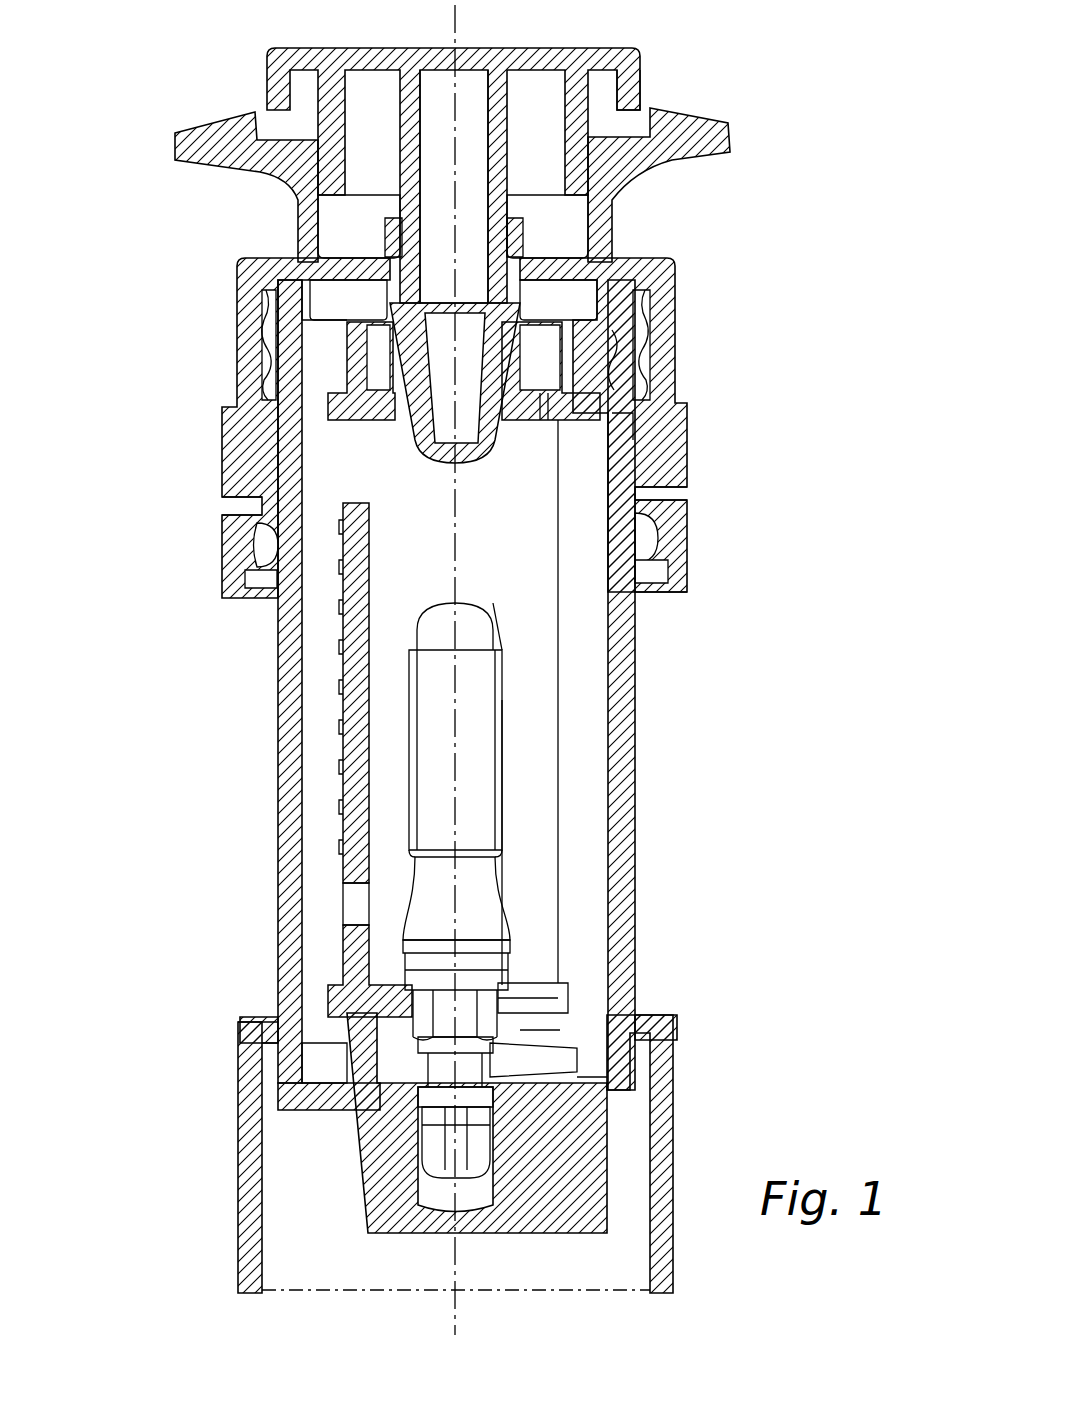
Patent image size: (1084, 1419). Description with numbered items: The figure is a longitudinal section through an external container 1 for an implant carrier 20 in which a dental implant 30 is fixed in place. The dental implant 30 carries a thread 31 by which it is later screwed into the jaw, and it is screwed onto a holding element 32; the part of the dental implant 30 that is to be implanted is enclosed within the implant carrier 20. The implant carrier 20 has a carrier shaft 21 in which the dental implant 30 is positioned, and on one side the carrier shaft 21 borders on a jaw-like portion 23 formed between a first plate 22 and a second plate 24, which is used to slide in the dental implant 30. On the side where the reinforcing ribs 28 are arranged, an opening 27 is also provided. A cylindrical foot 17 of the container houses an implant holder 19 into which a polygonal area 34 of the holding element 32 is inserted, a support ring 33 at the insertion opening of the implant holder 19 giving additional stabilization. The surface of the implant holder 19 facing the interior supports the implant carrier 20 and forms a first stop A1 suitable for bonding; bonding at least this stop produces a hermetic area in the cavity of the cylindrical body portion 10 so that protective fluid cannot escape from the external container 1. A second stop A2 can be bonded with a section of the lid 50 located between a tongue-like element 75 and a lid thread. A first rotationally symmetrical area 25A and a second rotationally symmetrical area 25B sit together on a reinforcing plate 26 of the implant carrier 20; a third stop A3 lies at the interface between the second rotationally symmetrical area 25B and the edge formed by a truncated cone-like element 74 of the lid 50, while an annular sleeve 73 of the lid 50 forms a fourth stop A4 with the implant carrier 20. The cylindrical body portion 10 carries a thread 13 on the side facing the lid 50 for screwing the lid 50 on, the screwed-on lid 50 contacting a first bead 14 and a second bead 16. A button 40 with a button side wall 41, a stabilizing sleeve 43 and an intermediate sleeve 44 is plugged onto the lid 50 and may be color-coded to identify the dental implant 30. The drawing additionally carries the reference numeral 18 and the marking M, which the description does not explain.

The external container 1 is at (842, 148).
The cylindrical body portion 10 is at (637, 692).
The thread 13 is at (650, 367).
The first bead 14 is at (665, 495).
The second bead 16 is at (658, 588).
The cylindrical foot 17 is at (673, 1247).
The bottom edge 18 is at (512, 1290).
The implant holder 19 is at (420, 1233).
The implant carrier 20 is at (562, 827).
The carrier shaft 21 is at (560, 925).
The first plate 22 is at (548, 1030).
The jaw-like portion 23 is at (548, 1032).
The second plate 24 is at (497, 1050).
The first rotationally symmetrical area 25A is at (522, 338).
The second rotationally symmetrical area 25B is at (580, 275).
The reinforcing plate 26 is at (612, 423).
The opening 27 is at (352, 905).
The reinforcing ribs 28 is at (335, 692).
The dental implant 30 is at (505, 710).
The thread 31 is at (502, 773).
The holding element 32 is at (500, 985).
The support ring 33 is at (493, 1110).
The polygonal area 34 is at (493, 1190).
The button 40 is at (595, 42).
The button side wall 41 is at (643, 76).
The stabilizing sleeve 43 is at (508, 98).
The intermediate sleeve 44 is at (598, 128).
The lid 50 is at (708, 112).
The annular sleeve 73 is at (410, 437).
The truncated cone-like element 74 is at (400, 352).
The tongue-like element 75 is at (612, 378).
The first stop A1 is at (375, 1103).
The second stop A2 is at (300, 290).
The third stop A3 is at (392, 315).
The fourth stop A4 is at (420, 430).
The axis M is at (469, 670).